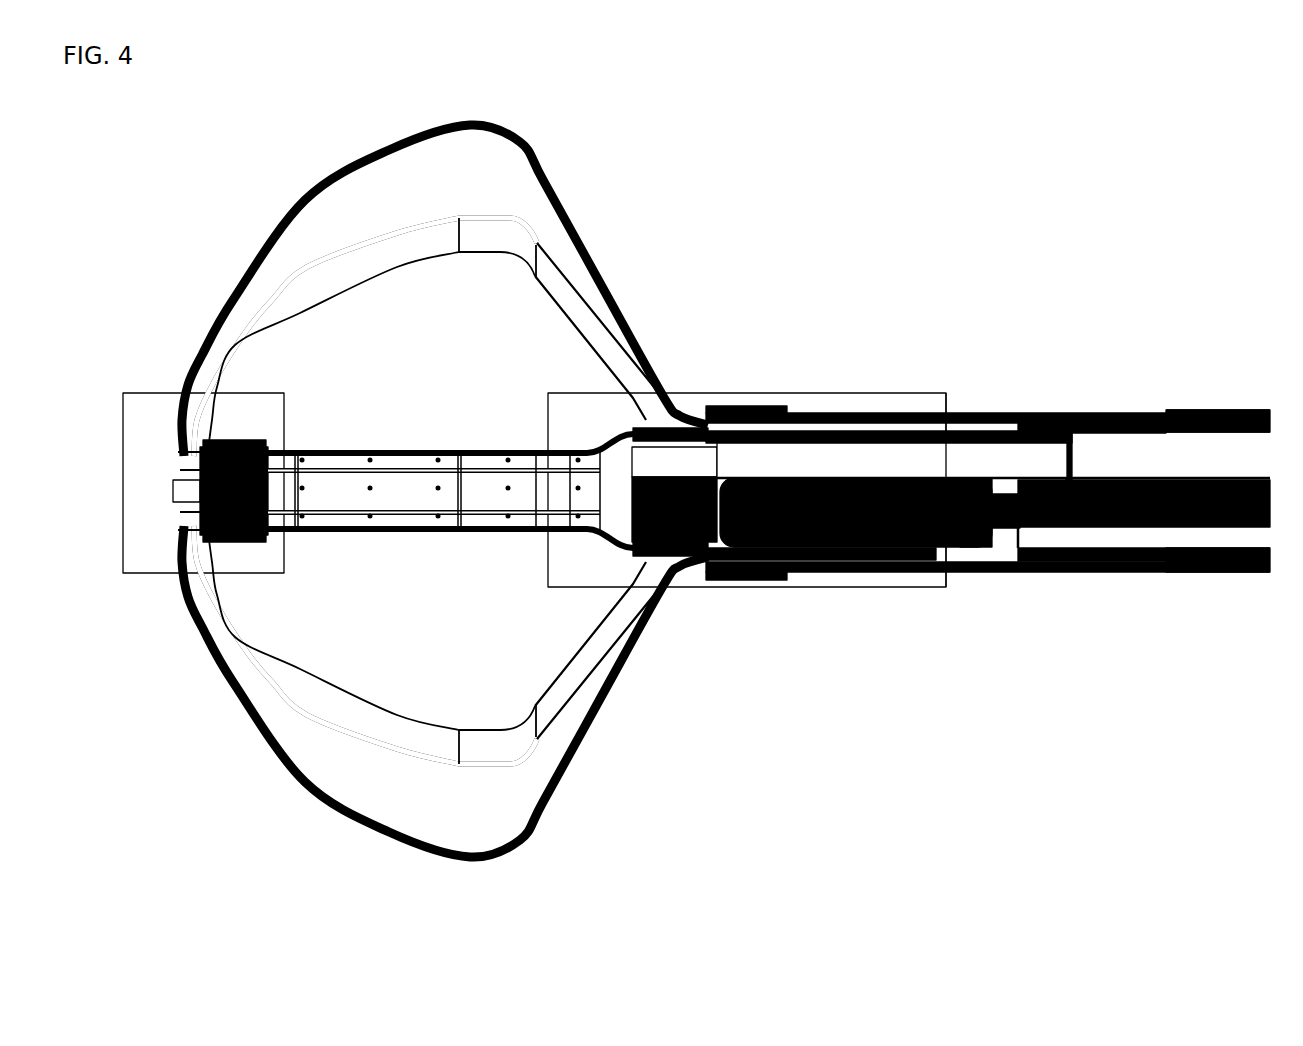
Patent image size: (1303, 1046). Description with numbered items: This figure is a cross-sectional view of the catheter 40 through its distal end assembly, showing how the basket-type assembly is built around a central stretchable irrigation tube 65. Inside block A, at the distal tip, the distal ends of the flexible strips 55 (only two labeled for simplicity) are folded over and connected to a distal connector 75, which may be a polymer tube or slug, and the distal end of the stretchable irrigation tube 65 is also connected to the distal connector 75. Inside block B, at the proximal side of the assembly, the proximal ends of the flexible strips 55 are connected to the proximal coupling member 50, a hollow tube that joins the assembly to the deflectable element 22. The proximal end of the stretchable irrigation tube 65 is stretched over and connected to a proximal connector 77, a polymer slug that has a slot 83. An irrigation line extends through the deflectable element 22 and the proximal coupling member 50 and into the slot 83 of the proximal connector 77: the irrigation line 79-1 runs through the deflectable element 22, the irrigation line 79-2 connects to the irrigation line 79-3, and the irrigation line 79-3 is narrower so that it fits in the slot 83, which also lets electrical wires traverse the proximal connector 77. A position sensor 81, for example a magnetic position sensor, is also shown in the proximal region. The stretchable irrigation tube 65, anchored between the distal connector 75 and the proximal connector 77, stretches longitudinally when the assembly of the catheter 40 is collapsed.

The catheter 40 is at (1057, 216).
The flexible strips 55 is at (285, 216).
The stretchable irrigation tube 65 is at (407, 440).
The distal connector 75 is at (207, 547).
The proximal connector 77 is at (680, 572).
The slot 83 is at (683, 468).
The irrigation line 79-1 is at (1167, 450).
The irrigation line 79-2 is at (887, 450).
The irrigation line 79-3 is at (720, 412).
The proximal coupling member 50 is at (1020, 410).
The position sensor 81 is at (975, 548).
The deflectable element 22 is at (1228, 573).
The block A is at (138, 392).
The block B is at (695, 425).